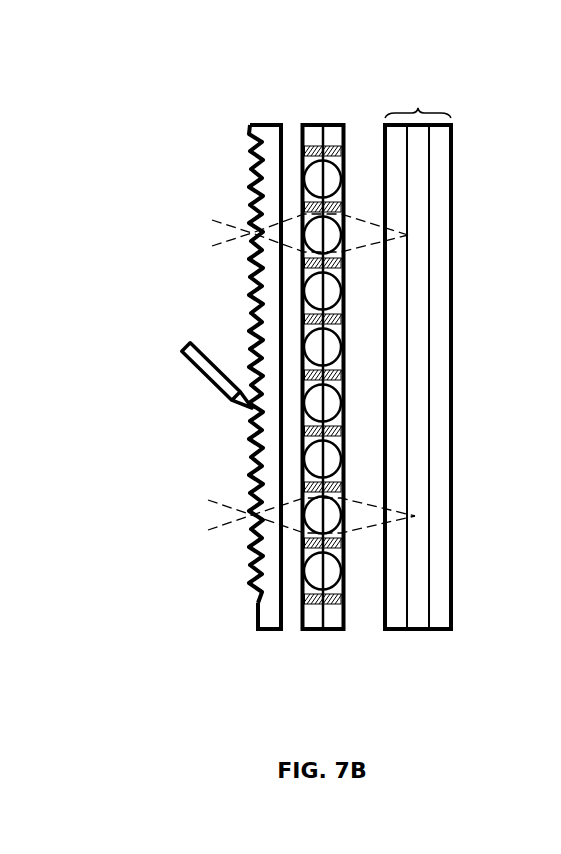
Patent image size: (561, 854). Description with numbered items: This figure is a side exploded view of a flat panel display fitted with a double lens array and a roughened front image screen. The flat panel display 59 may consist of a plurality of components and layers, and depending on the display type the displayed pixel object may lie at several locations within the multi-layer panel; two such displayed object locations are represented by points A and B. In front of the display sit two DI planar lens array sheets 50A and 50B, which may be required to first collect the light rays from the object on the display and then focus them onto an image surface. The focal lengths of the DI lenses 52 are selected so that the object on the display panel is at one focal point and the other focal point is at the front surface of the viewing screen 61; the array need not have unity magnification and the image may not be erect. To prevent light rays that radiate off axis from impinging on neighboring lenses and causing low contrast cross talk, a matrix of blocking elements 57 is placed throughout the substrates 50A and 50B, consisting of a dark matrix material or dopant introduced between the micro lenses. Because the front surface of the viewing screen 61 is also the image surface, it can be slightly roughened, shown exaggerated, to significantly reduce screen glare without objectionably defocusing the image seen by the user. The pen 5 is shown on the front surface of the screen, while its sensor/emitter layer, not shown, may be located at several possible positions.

The pen 5 is at (196, 372).
The DI planar lens array sheet 50A is at (310, 135).
The DI planar lens array sheet 50B is at (332, 618).
The DI lens 52 is at (328, 403).
The blocking element 57 is at (305, 318).
The flat panel display 59 is at (418, 108).
The viewing screen 61 is at (270, 160).
The displayed object location A is at (408, 235).
The displayed object location B is at (415, 516).